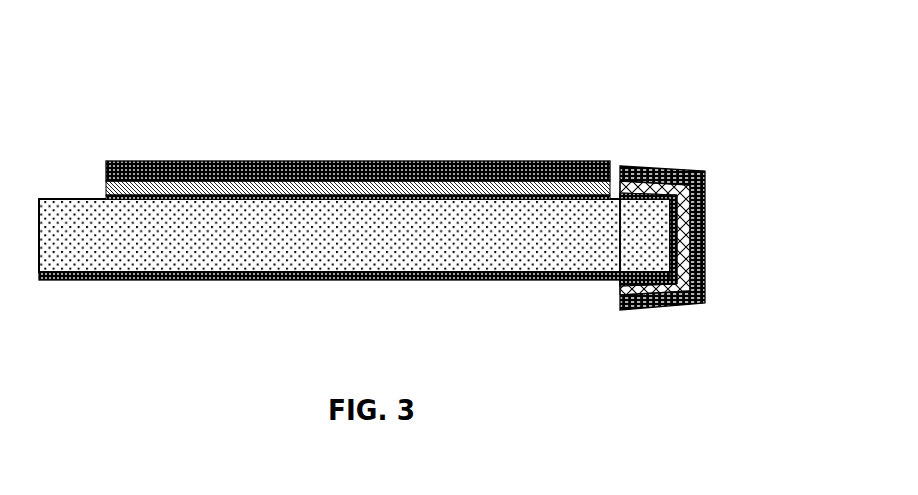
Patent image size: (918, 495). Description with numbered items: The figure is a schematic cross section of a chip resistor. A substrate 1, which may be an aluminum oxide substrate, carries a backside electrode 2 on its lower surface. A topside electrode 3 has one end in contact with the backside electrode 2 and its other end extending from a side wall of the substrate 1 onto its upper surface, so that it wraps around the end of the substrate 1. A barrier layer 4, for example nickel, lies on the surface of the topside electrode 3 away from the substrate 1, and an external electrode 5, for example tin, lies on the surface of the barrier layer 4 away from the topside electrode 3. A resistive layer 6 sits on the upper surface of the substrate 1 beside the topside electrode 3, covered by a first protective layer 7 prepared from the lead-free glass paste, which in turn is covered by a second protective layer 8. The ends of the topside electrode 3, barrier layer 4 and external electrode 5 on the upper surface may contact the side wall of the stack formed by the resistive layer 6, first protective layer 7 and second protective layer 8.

The substrate 1 is at (303, 258).
The backside electrode 2 is at (168, 278).
The topside electrode 3 is at (622, 167).
The barrier layer 4 is at (655, 169).
The external electrode 5 is at (694, 170).
The resistive layer 6 is at (229, 161).
The first protective layer 7 is at (298, 161).
The second protective layer 8 is at (400, 160).